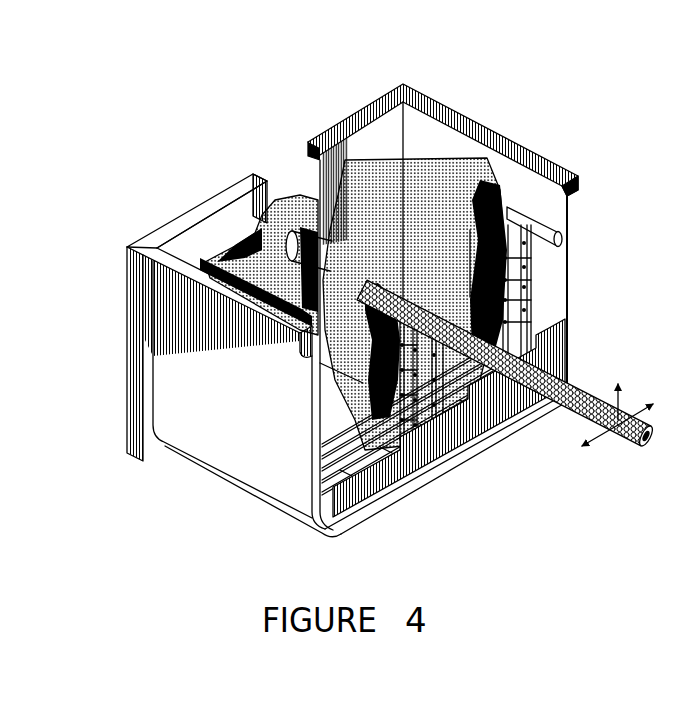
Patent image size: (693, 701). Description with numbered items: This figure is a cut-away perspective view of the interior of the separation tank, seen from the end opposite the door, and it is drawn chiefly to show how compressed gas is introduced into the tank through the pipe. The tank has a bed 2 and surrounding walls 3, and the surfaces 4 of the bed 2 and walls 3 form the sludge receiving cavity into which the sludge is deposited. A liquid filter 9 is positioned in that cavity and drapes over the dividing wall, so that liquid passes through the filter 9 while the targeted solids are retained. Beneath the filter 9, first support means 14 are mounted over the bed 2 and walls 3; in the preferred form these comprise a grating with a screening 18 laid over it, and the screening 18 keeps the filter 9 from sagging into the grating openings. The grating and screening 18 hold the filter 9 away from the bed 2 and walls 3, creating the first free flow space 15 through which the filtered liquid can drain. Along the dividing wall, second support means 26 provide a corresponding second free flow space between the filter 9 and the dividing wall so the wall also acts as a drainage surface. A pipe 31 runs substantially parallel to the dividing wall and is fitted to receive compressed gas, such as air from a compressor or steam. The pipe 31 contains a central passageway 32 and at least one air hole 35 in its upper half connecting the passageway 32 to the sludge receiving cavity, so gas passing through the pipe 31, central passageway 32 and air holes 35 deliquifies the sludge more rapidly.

The bed 2 is at (520, 438).
The walls 3 is at (312, 422).
The surfaces 4 is at (548, 322).
The liquid filter 9 is at (457, 178).
The first support means 14 is at (532, 290).
The first free flow space 15 is at (572, 198).
The screening 18 is at (520, 190).
The second support means 26 is at (437, 462).
The pipe 31 is at (300, 224).
The central passageway 32 is at (650, 443).
The air hole 35 is at (590, 400).